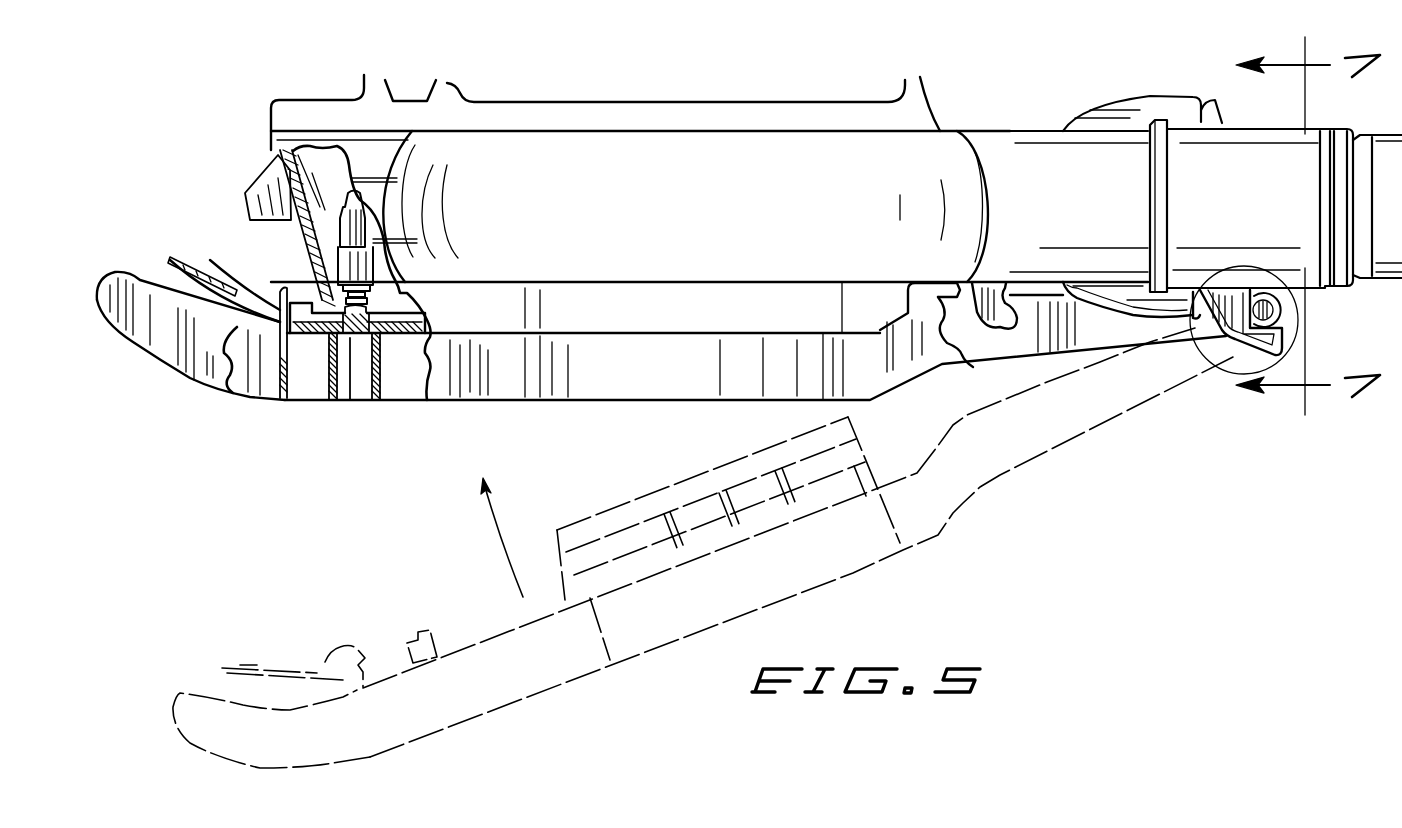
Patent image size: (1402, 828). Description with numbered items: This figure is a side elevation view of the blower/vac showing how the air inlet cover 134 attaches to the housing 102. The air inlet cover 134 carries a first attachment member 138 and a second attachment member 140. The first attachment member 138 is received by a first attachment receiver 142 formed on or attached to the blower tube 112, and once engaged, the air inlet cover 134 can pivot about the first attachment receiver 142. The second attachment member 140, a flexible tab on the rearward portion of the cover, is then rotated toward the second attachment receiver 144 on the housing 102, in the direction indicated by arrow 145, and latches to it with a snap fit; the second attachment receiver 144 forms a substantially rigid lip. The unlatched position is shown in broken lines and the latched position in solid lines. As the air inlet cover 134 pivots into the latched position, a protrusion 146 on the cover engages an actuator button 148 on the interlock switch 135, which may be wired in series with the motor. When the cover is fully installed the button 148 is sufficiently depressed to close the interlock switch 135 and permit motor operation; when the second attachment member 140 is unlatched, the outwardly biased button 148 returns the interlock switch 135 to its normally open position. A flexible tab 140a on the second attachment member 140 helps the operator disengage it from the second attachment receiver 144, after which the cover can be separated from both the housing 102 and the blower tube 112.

The housing 102 is at (942, 130).
The blower tube 112 is at (1343, 128).
The air inlet cover 134 is at (628, 400).
The interlock switch 135 is at (365, 258).
The first attachment member 138 is at (1270, 305).
The second attachment member 140 is at (257, 293).
The flexible tab 140a is at (170, 259).
The first attachment receiver 142 is at (1232, 346).
The second attachment receiver 144 is at (312, 302).
The arrow 145 is at (505, 548).
The protrusion 146 is at (350, 400).
The actuator button 148 is at (377, 311).